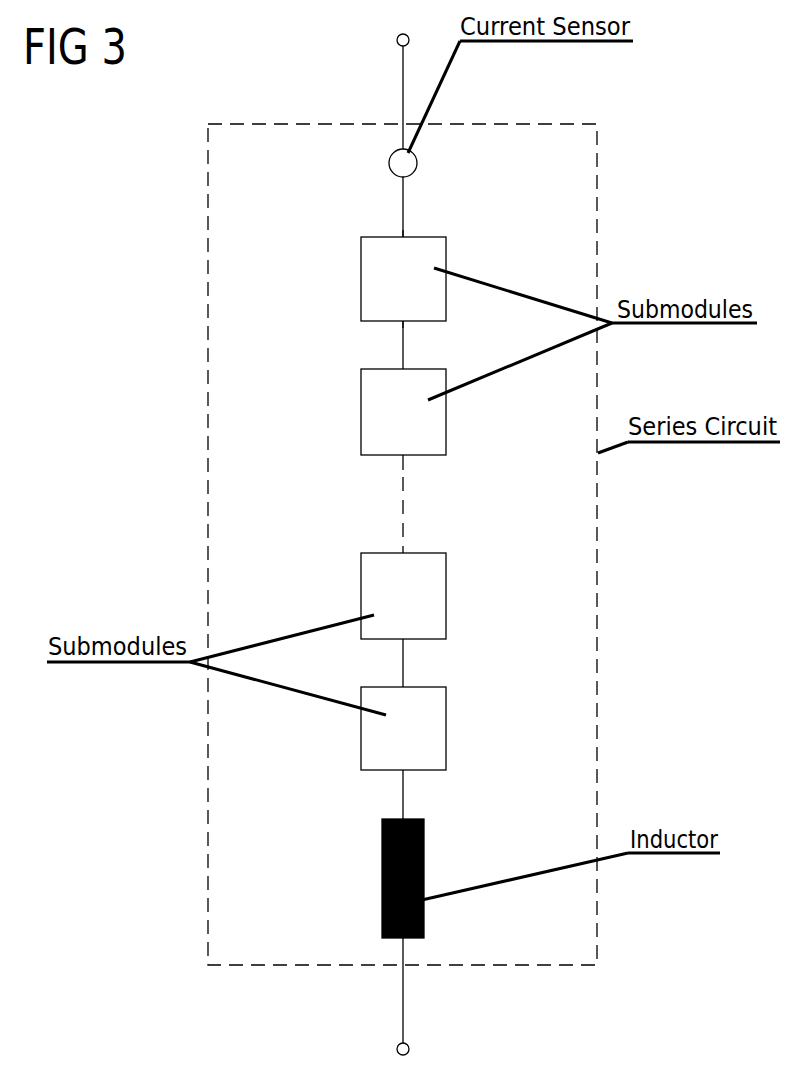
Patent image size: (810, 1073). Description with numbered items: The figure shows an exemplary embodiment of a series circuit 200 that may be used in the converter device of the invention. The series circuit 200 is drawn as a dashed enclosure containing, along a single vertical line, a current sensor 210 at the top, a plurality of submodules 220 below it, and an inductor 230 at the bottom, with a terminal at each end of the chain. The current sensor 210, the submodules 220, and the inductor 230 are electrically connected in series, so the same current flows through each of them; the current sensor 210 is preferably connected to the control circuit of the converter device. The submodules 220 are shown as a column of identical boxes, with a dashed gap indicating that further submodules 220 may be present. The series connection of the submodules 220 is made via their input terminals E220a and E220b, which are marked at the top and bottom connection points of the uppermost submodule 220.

The series circuit 200 is at (598, 512).
The current sensor 210 is at (389, 163).
The submodules 220 is at (361, 282).
The inductor 230 is at (382, 870).
The input terminal E220a is at (404, 236).
The input terminal E220b is at (400, 323).